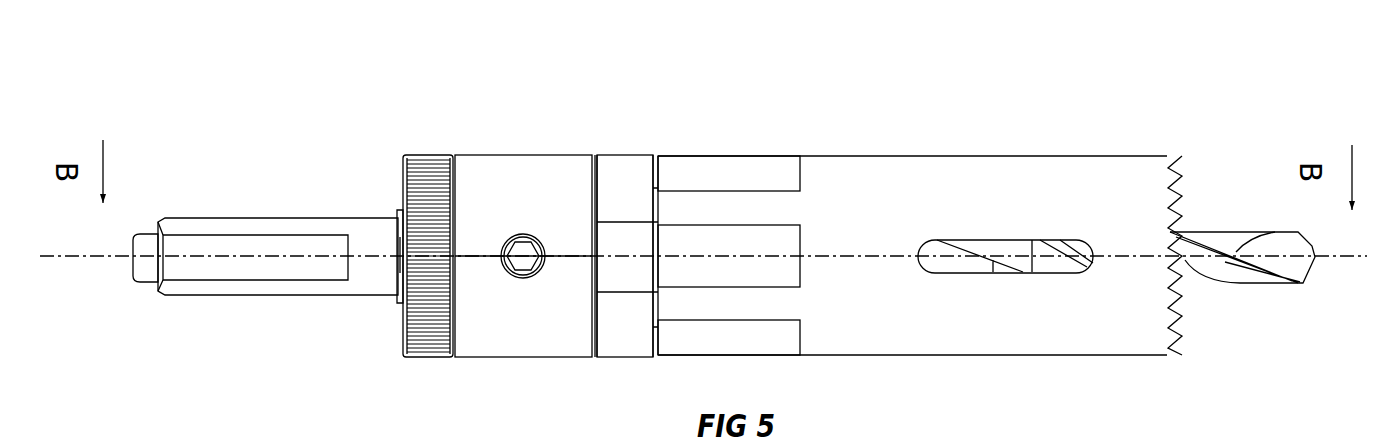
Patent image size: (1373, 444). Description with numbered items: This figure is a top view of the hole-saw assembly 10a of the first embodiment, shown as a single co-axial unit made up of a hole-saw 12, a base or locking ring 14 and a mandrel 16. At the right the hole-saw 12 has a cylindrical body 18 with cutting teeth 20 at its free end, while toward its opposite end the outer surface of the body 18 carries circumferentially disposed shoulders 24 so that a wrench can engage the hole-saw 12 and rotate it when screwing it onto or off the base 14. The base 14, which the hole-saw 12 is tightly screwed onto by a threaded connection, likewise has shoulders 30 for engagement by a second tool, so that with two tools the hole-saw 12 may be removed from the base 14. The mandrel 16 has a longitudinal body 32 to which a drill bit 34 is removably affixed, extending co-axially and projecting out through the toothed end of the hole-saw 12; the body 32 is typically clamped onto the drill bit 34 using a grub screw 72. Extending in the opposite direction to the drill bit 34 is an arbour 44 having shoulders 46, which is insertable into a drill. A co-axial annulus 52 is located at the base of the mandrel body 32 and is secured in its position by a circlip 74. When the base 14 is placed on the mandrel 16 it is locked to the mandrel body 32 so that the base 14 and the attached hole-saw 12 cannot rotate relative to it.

The hole-saw assembly 10a is at (878, 85).
The hole-saw 12 is at (1002, 152).
The base or locking ring 14 is at (630, 152).
The mandrel 16 is at (510, 150).
The cylindrical body 18 is at (1070, 178).
The cutting teeth 20 is at (1178, 203).
The shoulders 24 is at (743, 178).
The shoulders 30 is at (633, 278).
The longitudinal body 32 is at (527, 340).
The drill bit 34 is at (1202, 270).
The arbour 44 is at (367, 283).
The shoulders 46 is at (218, 250).
The annulus 52 is at (405, 347).
The grub screw 72 is at (537, 237).
The circlip 74 is at (400, 193).